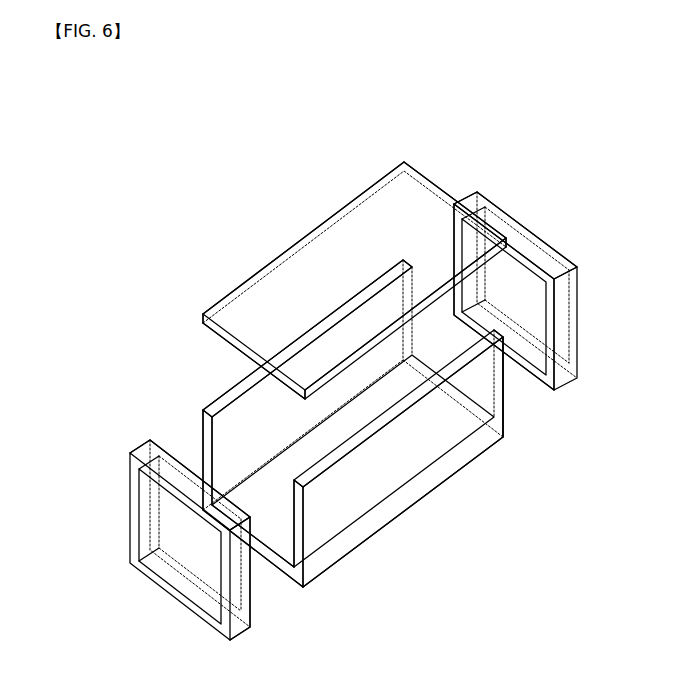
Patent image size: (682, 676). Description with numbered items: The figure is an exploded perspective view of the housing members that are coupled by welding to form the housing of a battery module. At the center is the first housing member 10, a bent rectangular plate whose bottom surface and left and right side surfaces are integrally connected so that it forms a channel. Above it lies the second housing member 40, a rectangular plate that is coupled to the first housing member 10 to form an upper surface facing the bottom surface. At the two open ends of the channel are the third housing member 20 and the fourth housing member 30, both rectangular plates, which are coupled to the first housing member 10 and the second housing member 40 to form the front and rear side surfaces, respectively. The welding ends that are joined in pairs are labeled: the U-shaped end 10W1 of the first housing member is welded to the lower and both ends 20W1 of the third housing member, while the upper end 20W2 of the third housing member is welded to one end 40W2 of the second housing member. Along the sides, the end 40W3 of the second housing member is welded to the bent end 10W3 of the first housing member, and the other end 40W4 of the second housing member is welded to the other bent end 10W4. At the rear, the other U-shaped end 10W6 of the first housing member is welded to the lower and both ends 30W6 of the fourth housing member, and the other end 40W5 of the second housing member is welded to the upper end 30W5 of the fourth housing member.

The first housing member 10 is at (394, 462).
The U-shaped end of the first housing member 10W1 is at (305, 528).
The bent end of the first housing member 10W3 is at (226, 384).
The other bent end of the first housing member 10W4 is at (440, 410).
The other U-shaped end of the first housing member 10W6 is at (507, 406).
The third housing member 20 is at (129, 507).
The lower and both ends of the third housing member 20W1 is at (252, 598).
The upper end of the third housing member 20W2 is at (151, 440).
The fourth housing member 30 is at (579, 305).
The upper end of the fourth housing member 30W5 is at (530, 248).
The lower and both ends of the fourth housing member 30W6 is at (562, 343).
The second housing member 40 is at (272, 296).
The one end of the second housing member 40W2 is at (207, 328).
The end of the second housing member 40W3 is at (328, 207).
The other end of the second housing member 40W4 is at (432, 297).
The other end of the second housing member 40W5 is at (423, 172).